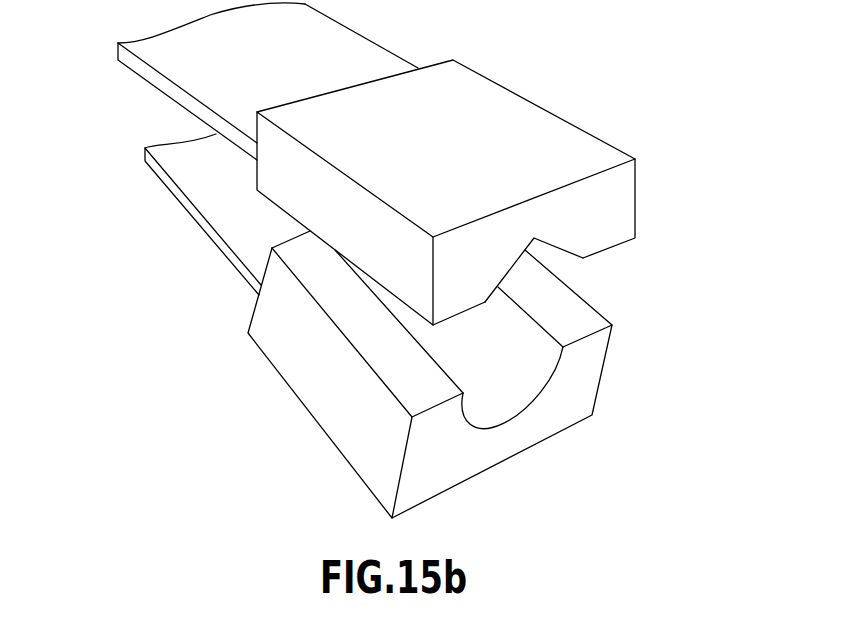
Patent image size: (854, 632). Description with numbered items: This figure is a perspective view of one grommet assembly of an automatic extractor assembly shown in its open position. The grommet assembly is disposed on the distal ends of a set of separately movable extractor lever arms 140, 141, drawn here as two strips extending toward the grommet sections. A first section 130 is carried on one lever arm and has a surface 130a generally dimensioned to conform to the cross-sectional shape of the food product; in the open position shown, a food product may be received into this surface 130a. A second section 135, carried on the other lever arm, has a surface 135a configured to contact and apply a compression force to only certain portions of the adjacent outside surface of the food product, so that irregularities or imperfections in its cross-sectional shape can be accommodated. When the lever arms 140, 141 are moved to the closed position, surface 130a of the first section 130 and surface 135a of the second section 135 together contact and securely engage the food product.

The first section 130 is at (609, 383).
The surface 130a is at (551, 367).
The second section 135 is at (653, 197).
The surface 135a is at (571, 258).
The lever arm 140 is at (165, 178).
The lever arm 141 is at (136, 62).